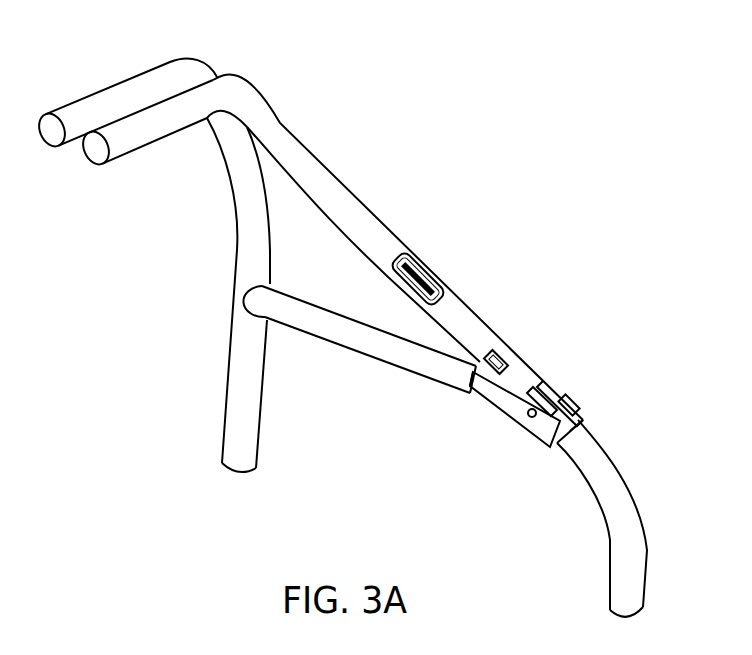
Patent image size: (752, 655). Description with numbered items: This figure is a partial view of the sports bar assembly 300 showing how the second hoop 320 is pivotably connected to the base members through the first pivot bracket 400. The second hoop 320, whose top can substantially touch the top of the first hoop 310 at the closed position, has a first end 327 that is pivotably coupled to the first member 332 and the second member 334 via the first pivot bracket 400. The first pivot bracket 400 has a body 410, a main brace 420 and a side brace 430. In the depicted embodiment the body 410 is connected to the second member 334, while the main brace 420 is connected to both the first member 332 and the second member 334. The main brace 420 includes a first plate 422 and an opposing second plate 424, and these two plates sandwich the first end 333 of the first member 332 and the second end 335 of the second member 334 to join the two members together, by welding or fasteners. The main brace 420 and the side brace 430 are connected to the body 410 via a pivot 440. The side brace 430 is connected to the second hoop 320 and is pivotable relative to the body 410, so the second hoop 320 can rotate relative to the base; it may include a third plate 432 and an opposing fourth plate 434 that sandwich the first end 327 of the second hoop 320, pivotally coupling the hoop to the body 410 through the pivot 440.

The sports bar assembly 300 is at (365, 316).
The first hoop 310 is at (102, 86).
The second hoop 320 is at (240, 71).
The first end 327 is at (512, 358).
The first member 332 is at (327, 336).
The first end 333 is at (467, 369).
The second member 334 is at (618, 494).
The second end 335 is at (571, 423).
The first pivot bracket 400 is at (535, 376).
The body 410 is at (567, 397).
The main brace 420 is at (504, 411).
The first plate 422 is at (558, 386).
The second plate 424 is at (472, 372).
The side brace 430 is at (498, 367).
The third plate 432 is at (540, 335).
The fourth plate 434 is at (487, 364).
The pivot 440 is at (533, 418).